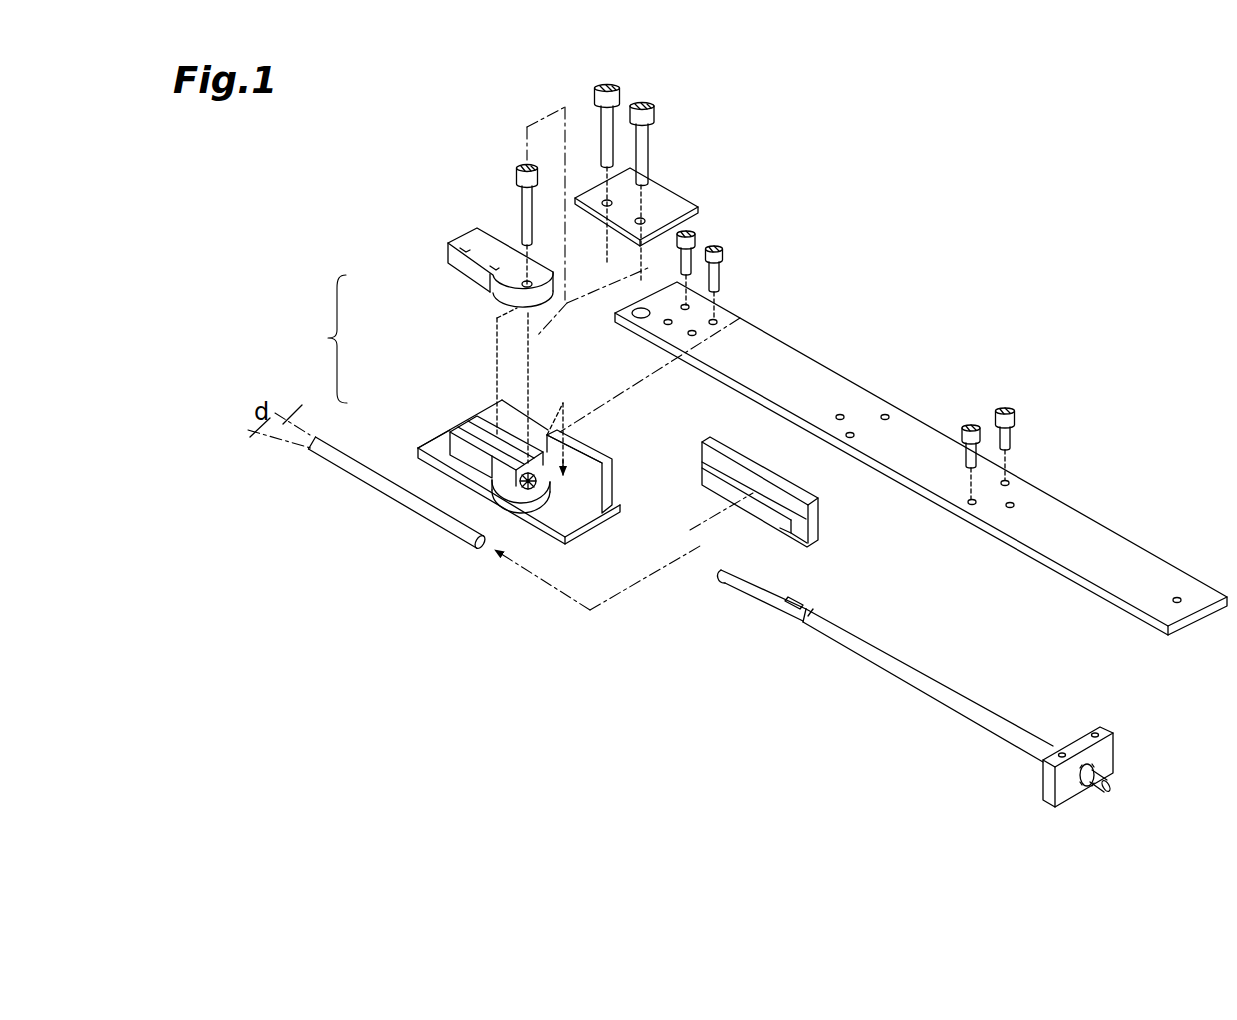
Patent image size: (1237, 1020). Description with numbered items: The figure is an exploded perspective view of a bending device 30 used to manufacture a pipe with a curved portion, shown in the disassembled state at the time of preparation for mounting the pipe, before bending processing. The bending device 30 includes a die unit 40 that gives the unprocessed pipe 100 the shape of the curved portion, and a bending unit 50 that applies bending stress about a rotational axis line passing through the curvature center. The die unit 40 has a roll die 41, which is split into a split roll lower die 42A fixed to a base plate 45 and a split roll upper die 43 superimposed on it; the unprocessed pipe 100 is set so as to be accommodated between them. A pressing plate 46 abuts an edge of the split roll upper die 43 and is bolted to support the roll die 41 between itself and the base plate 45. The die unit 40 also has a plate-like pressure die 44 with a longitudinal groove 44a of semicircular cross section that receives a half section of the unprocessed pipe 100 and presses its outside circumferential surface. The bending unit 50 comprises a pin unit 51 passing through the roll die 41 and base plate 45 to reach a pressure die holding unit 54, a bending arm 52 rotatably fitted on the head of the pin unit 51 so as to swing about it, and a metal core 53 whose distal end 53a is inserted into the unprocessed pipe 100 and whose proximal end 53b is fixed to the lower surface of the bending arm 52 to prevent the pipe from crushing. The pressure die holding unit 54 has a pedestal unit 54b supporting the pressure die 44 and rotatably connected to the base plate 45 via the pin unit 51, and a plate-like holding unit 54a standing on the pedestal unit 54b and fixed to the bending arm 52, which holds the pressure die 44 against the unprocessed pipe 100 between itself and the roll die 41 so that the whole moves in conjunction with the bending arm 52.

The bending device 30 is at (878, 207).
The die unit 40 is at (462, 230).
The roll die 41 is at (321, 339).
The split roll lower die 42A is at (448, 439).
The split roll upper die 43 is at (452, 254).
The pressure die 44 is at (803, 514).
The longitudinal groove 44a is at (791, 521).
The base plate 45 is at (425, 462).
The pressing plate 46 is at (670, 192).
The bending unit 50 is at (836, 371).
The pin unit 51 is at (517, 203).
The bending arm 52 is at (1081, 509).
The metal core 53 is at (937, 688).
The distal end 53a is at (754, 585).
The proximal end 53b is at (1118, 749).
The pressure die holding unit 54 is at (553, 496).
The plate-like holding unit 54a is at (604, 482).
The pedestal unit 54b is at (578, 535).
The unprocessed pipe 100 is at (336, 473).